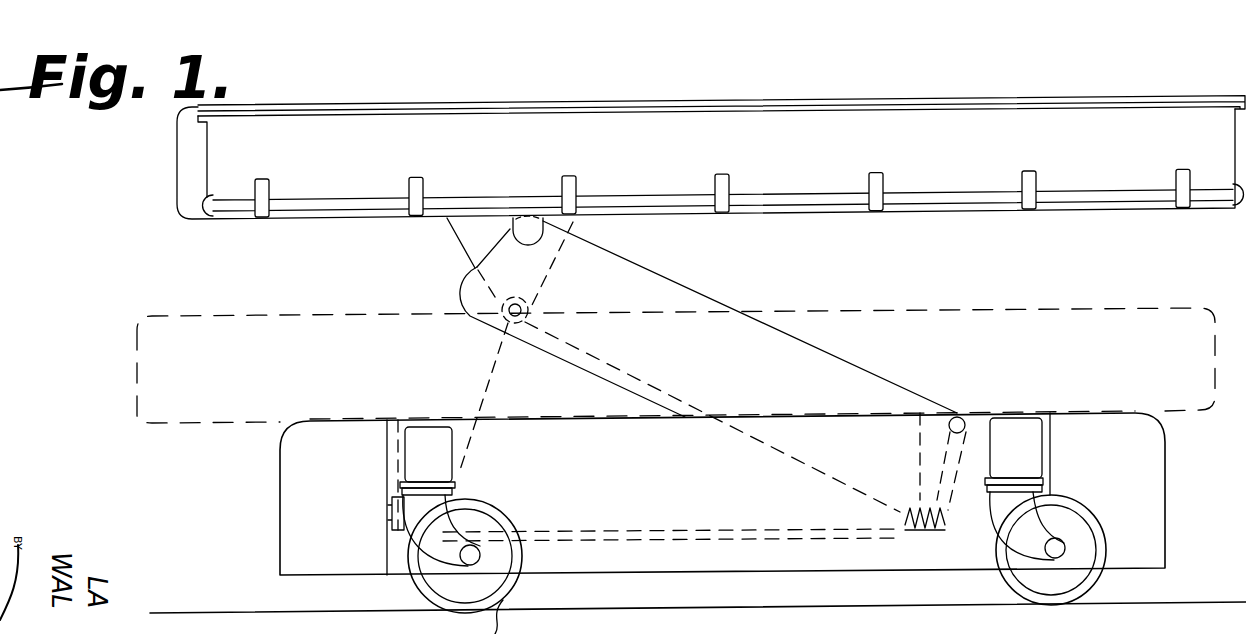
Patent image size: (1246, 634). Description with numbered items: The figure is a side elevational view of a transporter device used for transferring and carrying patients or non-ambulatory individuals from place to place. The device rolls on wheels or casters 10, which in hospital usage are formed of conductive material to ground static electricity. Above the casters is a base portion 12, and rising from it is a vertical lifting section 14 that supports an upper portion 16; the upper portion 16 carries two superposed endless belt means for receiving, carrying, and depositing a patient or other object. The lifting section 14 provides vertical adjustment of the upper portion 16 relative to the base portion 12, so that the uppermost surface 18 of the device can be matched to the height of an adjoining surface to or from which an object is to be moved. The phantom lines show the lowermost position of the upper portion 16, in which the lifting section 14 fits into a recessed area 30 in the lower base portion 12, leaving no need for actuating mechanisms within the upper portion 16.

The wheels or casters 10 is at (1093, 585).
The base portion 12 is at (1153, 485).
The vertical lifting section 14 is at (837, 362).
The upper portion 16 is at (222, 172).
The uppermost surface 18 is at (885, 101).
The recessed area 30 is at (605, 530).